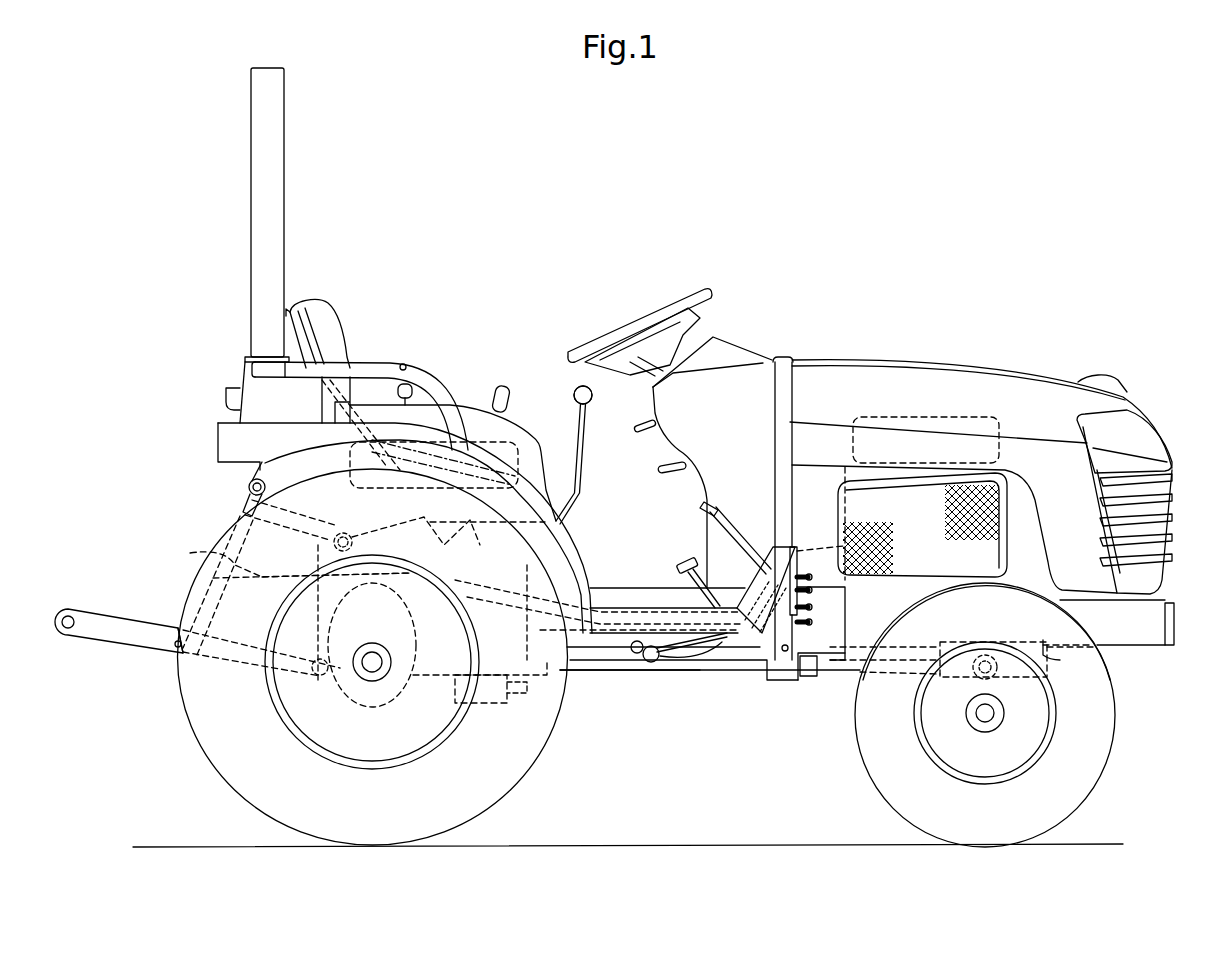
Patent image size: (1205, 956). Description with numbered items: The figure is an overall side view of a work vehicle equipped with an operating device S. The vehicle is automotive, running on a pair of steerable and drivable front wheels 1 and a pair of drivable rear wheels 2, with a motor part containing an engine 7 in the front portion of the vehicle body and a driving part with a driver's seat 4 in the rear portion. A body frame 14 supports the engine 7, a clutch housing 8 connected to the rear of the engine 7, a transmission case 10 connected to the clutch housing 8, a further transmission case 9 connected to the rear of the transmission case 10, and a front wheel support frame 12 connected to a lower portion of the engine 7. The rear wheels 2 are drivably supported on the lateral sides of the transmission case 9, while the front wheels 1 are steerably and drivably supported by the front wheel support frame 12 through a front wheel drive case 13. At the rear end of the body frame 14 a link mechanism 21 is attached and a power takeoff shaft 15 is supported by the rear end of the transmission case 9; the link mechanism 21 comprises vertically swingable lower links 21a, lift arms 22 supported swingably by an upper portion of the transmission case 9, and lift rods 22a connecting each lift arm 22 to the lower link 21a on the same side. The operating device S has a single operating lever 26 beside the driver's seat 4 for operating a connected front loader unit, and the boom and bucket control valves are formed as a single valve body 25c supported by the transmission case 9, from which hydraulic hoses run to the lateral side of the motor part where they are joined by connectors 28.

The front wheel 1 is at (1097, 767).
The rear wheel 2 is at (205, 766).
The driver's seat 4 is at (338, 325).
The engine 7 is at (930, 417).
The clutch housing 8 is at (830, 650).
The transmission case 9 is at (440, 686).
The transmission case 10 is at (667, 672).
The front wheel support frame 12 is at (1141, 642).
The front wheel drive case 13 is at (1015, 680).
The body frame 14 is at (609, 675).
The power takeoff shaft 15 is at (283, 616).
The link mechanism 21 is at (118, 608).
The lower link 21a is at (124, 642).
The lift arm 22 is at (243, 515).
The lift rod 22a is at (190, 553).
The valve body 25c is at (372, 645).
The operating lever 26 is at (585, 440).
The connector 28 is at (812, 622).
The operating device S is at (577, 385).